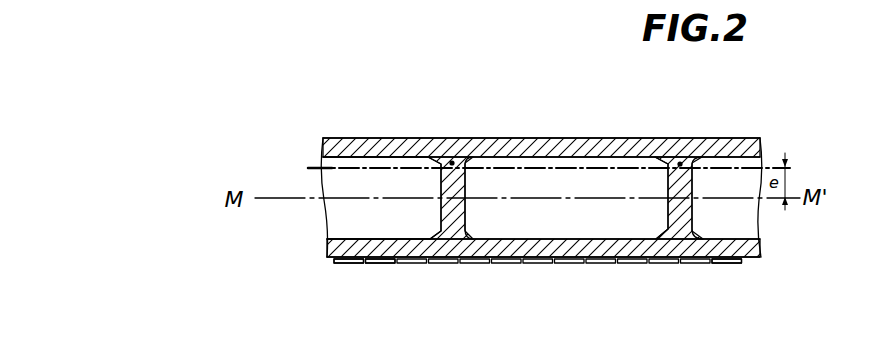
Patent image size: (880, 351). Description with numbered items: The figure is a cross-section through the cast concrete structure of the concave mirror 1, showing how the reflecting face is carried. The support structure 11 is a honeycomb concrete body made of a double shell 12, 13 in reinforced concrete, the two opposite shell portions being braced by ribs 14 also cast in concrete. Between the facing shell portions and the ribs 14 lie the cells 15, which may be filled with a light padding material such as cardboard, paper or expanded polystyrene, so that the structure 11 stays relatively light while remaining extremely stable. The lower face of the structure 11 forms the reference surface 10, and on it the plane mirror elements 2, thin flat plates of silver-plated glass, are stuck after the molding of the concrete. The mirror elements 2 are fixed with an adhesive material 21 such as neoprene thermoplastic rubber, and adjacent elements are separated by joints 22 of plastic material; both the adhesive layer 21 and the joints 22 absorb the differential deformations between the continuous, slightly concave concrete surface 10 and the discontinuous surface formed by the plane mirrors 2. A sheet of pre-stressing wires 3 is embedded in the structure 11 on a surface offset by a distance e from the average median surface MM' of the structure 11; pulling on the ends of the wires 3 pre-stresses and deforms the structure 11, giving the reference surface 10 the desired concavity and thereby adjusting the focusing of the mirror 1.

The concave mirror 1 is at (756, 118).
The plane mirror elements 2 is at (467, 263).
The pre-stressing wires 3 is at (318, 168).
The reference surface 10 is at (748, 263).
The support structure 11 is at (618, 138).
The shell 12 is at (748, 249).
The shell 13 is at (708, 147).
The ribs 14 is at (465, 180).
The cells 15 is at (546, 152).
The adhesive material 21 is at (330, 260).
The joints 22 is at (393, 263).